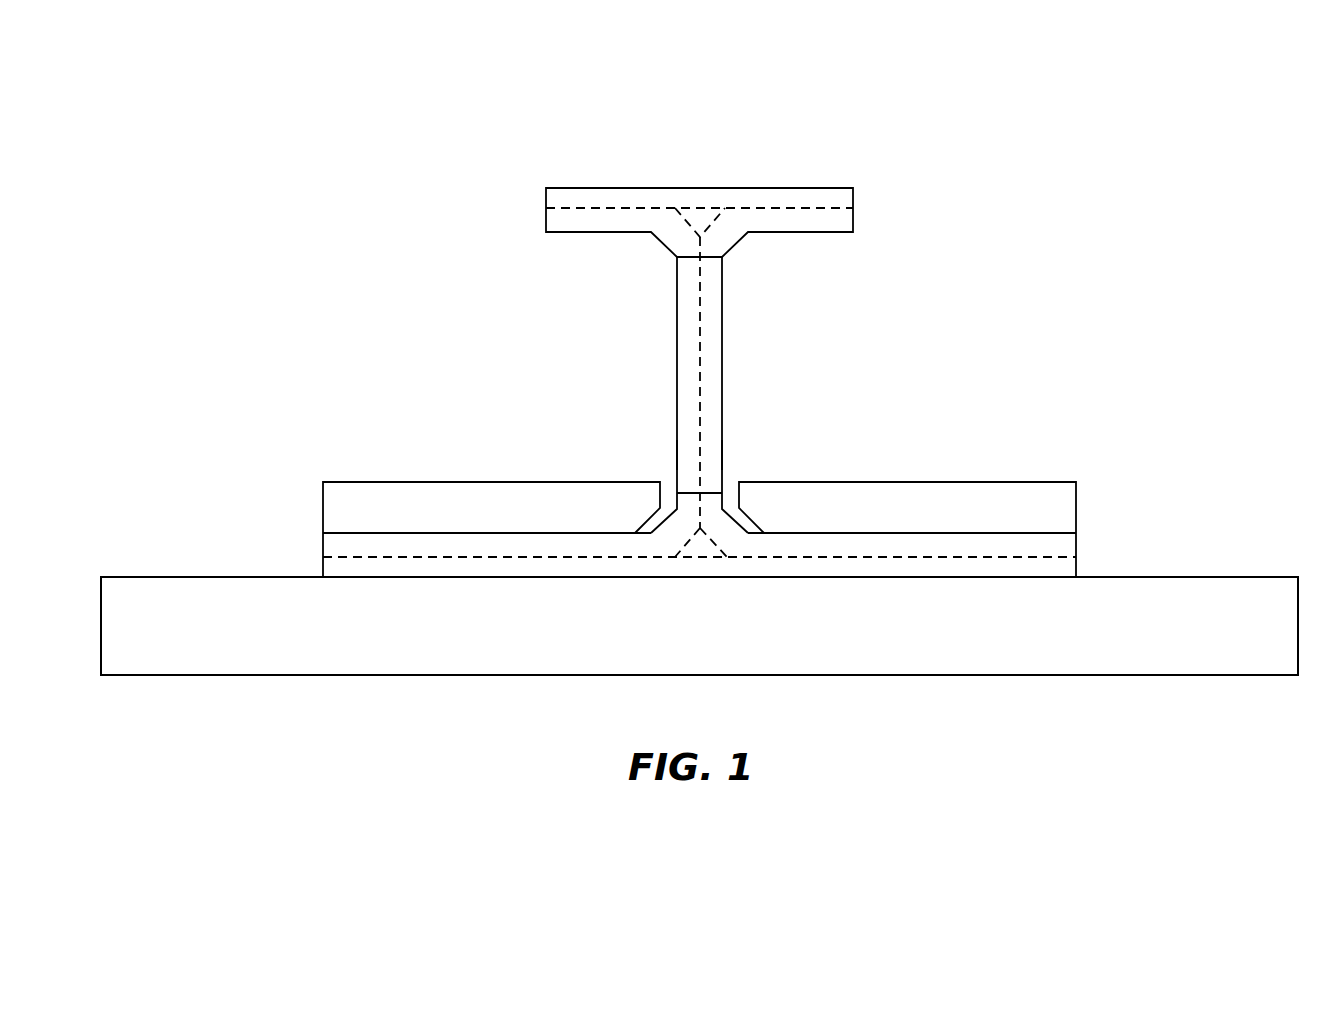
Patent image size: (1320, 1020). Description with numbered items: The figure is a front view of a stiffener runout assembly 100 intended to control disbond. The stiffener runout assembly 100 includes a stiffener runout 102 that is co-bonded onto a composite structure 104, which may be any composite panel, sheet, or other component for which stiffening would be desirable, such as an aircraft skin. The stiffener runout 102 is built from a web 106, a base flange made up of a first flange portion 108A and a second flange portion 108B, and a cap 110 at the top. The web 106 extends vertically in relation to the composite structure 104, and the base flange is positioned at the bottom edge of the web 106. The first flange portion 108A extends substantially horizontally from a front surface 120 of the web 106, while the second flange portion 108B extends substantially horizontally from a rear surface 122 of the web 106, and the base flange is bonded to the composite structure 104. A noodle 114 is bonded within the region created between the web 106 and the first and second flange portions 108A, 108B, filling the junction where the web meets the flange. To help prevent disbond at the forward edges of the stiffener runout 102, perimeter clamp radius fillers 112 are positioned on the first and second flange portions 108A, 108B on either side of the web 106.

The stiffener runout assembly 100 is at (225, 153).
The stiffener runout 102 is at (769, 354).
The composite structure 104 is at (1198, 592).
The web 106 is at (713, 367).
The first flange portion 108A is at (1067, 552).
The second flange portion 108B is at (337, 550).
The cap 110 is at (745, 197).
The perimeter clamp radius fillers 112 is at (337, 490).
The noodle 114 is at (703, 548).
The front surface 120 is at (724, 452).
The rear surface 122 is at (675, 452).